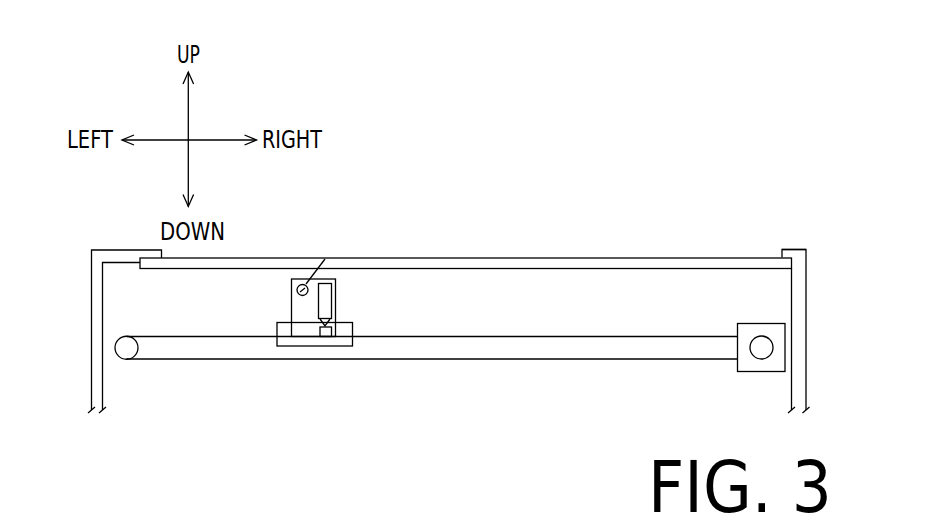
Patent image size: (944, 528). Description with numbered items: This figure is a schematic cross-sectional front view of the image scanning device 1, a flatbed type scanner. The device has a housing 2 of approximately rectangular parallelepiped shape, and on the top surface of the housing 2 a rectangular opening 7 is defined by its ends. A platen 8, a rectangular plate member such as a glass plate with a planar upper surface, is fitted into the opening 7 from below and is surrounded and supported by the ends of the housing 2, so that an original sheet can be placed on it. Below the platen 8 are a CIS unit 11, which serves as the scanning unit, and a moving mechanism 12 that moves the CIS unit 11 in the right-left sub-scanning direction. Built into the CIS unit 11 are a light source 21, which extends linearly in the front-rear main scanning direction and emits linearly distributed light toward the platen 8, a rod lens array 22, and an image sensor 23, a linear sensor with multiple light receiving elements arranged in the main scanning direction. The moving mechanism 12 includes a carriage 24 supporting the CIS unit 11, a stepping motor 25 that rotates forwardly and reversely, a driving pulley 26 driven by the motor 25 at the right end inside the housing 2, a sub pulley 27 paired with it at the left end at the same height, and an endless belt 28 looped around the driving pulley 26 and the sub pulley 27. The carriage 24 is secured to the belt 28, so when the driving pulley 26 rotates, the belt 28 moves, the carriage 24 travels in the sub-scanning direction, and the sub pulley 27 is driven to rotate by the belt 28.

The image scanning device 1 is at (482, 226).
The housing 2 is at (812, 281).
The opening 7 is at (778, 251).
The platen 8 is at (672, 258).
The CIS unit 11 is at (337, 295).
The moving mechanism 12 is at (736, 379).
The light source 21 is at (300, 283).
The rod lens array 22 is at (328, 283).
The image sensor 23 is at (323, 346).
The carriage 24 is at (348, 346).
The stepping motor 25 is at (760, 372).
The driving pulley 26 is at (758, 336).
The sub pulley 27 is at (128, 358).
The endless belt 28 is at (498, 359).